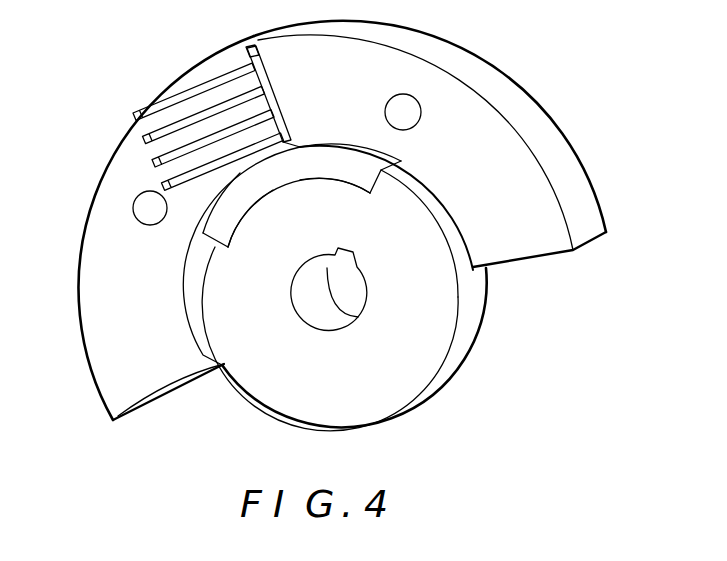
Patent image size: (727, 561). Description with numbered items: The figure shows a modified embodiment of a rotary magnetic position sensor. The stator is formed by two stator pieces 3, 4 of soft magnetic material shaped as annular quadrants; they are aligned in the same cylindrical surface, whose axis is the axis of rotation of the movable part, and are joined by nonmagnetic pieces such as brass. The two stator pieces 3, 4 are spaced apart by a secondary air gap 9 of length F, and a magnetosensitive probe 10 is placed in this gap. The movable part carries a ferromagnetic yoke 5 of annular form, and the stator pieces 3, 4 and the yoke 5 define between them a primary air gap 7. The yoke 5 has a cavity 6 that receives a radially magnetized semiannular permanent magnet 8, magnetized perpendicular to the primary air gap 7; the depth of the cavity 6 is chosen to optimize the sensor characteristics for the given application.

The stator piece 3 is at (90, 317).
The stator piece 4 is at (547, 190).
The yoke 5 is at (407, 383).
The cavity 6 is at (237, 222).
The primary air gap 7 is at (455, 237).
The permanent magnet 8 is at (343, 167).
The secondary air gap 9 is at (255, 41).
The magnetosensitive probe 10 is at (247, 68).